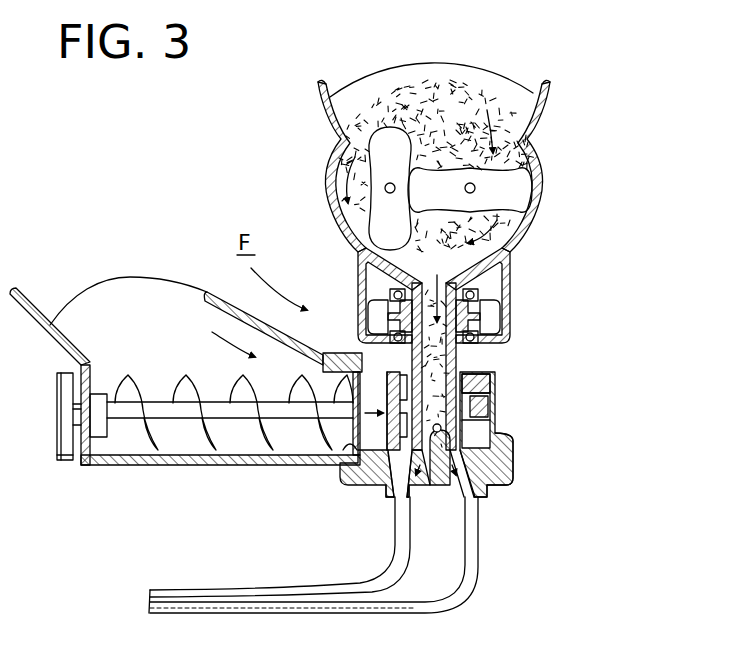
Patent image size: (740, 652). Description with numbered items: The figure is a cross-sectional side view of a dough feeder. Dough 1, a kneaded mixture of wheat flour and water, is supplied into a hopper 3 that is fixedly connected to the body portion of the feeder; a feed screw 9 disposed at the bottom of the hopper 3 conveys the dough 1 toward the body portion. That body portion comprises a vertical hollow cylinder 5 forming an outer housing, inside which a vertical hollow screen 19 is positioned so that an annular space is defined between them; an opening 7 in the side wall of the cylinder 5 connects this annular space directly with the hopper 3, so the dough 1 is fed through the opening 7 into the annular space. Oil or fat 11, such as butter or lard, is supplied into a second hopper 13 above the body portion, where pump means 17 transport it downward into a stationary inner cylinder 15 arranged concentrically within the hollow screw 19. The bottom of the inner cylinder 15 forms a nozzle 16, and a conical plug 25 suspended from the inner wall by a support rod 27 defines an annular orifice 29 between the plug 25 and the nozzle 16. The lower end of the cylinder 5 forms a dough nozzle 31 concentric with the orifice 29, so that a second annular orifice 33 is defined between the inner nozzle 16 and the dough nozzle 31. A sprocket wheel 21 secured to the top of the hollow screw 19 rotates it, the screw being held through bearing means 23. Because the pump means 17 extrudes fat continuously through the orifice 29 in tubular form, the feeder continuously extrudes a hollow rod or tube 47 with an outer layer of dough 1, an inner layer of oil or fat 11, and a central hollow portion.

The dough 1 is at (118, 290).
The hopper 3 is at (22, 296).
The vertical hollow cylinder 5 is at (497, 405).
The opening 7 is at (352, 441).
The feed screw 9 is at (213, 433).
The oil or fat 11 is at (474, 76).
The hopper 13 is at (540, 104).
The inner cylinder 15 is at (455, 355).
The nozzle 16 is at (465, 462).
The pump means 17 is at (519, 182).
The vertical hollow screen 19 is at (488, 382).
The sprocket wheel 21 is at (482, 317).
The bearing means 23 is at (479, 291).
The conical plug 25 is at (428, 490).
The support rod 27 is at (441, 428).
The annular orifice 29 is at (458, 500).
The dough nozzle 31 is at (387, 497).
The annular orifice 33 is at (484, 497).
The hollow rod or tube 47 is at (437, 570).